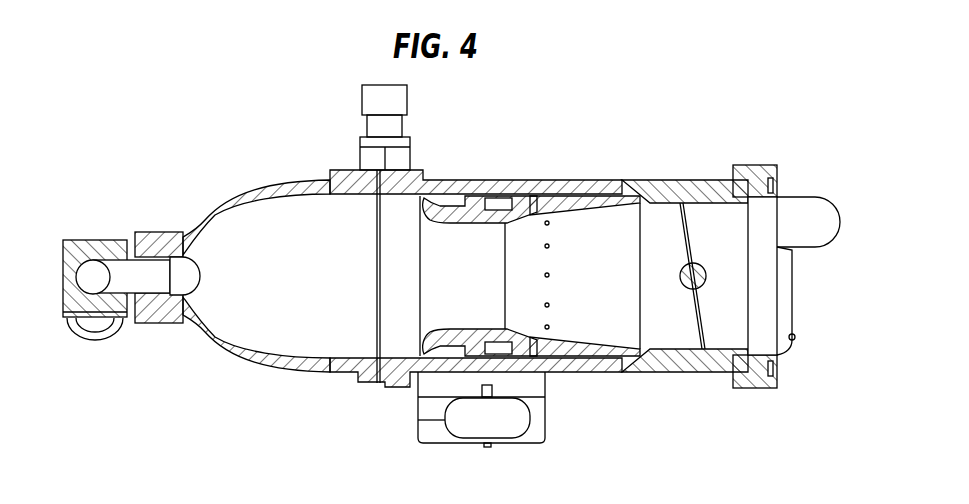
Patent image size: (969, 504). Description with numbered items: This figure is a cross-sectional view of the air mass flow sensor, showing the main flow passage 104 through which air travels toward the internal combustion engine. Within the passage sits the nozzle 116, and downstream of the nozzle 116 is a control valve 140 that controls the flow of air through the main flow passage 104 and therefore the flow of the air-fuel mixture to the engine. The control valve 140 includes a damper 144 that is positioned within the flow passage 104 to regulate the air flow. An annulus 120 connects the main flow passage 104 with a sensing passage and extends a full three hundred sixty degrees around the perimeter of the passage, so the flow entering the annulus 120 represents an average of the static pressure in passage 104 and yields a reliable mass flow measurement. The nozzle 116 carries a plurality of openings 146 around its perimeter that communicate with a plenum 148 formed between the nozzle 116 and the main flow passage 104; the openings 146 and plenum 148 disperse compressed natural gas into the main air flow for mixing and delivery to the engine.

The main flow passage 104 is at (207, 347).
The nozzle 116 is at (452, 330).
The annulus 120 is at (445, 225).
The control valve 140 is at (692, 253).
The damper 144 is at (722, 322).
The openings 146 is at (552, 246).
The plenum 148 is at (558, 347).